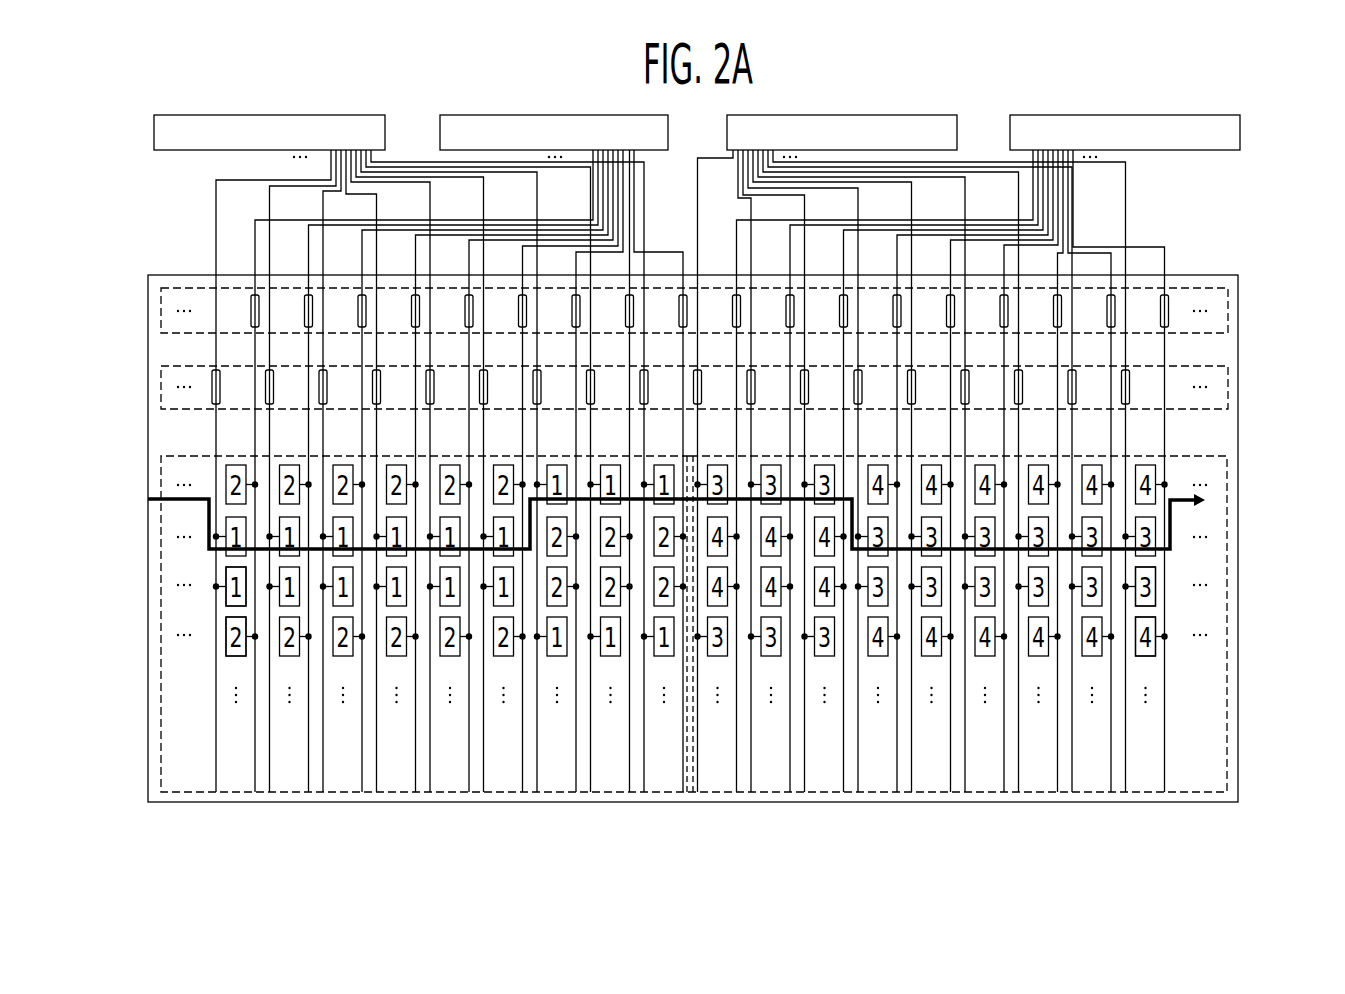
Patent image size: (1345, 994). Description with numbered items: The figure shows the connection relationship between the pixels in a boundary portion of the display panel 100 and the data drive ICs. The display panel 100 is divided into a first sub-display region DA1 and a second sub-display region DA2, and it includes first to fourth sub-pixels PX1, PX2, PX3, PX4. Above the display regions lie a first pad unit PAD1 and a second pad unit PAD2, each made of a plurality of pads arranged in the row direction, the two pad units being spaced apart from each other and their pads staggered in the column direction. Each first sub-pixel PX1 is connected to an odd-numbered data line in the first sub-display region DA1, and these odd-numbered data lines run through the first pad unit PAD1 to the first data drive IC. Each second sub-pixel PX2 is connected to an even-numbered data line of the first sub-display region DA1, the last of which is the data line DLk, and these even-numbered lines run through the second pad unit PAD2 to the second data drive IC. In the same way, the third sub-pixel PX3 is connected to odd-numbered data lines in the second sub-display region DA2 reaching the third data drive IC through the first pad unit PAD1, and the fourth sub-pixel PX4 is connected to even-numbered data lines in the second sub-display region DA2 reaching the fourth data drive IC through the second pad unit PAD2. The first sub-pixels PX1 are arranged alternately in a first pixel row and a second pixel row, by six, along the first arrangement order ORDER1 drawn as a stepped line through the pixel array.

The display panel 100 is at (1223, 275).
The first pad unit PAD1 is at (161, 385).
The second pad unit PAD2 is at (161, 308).
The first sub-display region DA1 is at (161, 718).
The second sub-display region DA2 is at (1227, 690).
The first sub-pixel PX1 is at (226, 592).
The second sub-pixel PX2 is at (226, 624).
The third sub-pixel PX3 is at (1156, 600).
The fourth sub-pixel PX4 is at (1156, 628).
The first arrangement order ORDER1 is at (693, 521).
The data line DLk is at (660, 471).